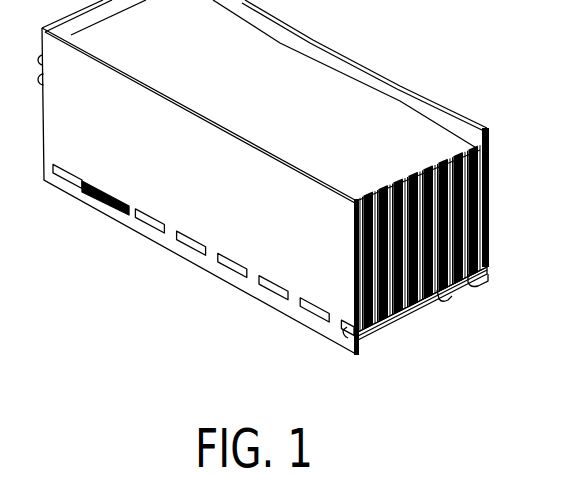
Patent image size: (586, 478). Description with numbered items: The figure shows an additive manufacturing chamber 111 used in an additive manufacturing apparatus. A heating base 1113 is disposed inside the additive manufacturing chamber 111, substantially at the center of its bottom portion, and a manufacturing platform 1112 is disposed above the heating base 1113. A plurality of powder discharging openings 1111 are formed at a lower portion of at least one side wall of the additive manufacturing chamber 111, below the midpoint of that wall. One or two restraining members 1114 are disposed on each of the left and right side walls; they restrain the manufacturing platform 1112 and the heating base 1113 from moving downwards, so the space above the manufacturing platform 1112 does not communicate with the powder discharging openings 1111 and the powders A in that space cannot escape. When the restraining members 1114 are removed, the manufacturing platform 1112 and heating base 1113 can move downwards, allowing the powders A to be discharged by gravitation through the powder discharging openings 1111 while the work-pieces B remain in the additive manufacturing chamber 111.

The additive manufacturing chamber 111 is at (455, 109).
The powder discharging openings 1111 is at (236, 273).
The manufacturing platform 1112 is at (395, 313).
The heating base 1113 is at (427, 299).
The restraining members 1114 is at (102, 208).
The powders A is at (452, 163).
The work-pieces B is at (417, 188).